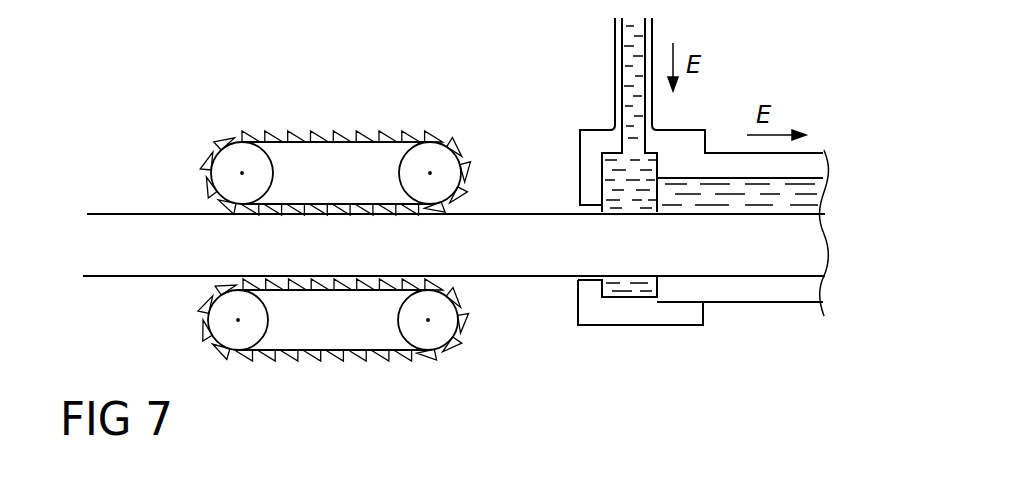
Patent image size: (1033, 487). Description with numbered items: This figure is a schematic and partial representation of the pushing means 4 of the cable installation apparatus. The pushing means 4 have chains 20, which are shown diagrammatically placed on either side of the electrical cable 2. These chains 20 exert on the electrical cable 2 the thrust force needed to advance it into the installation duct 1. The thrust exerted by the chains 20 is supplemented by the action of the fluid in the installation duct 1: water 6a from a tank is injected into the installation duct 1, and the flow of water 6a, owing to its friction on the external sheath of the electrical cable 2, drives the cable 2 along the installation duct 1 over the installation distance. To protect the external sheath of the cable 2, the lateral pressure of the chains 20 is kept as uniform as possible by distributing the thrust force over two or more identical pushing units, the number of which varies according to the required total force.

The installation duct 1 is at (772, 303).
The electrical cable 2 is at (538, 265).
The pushing means 4 is at (343, 247).
The chains 20 is at (363, 130).
The water 6a is at (614, 65).